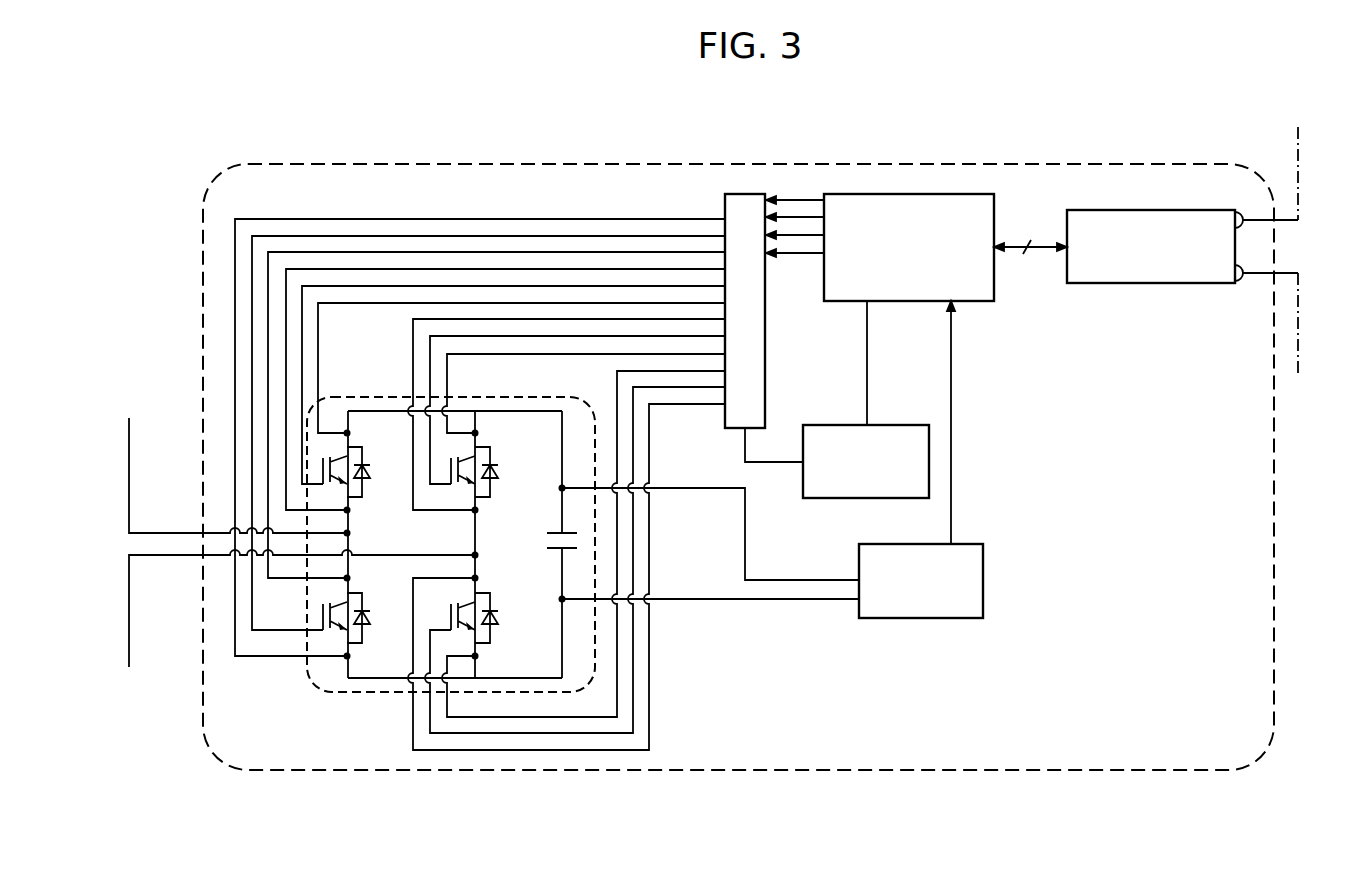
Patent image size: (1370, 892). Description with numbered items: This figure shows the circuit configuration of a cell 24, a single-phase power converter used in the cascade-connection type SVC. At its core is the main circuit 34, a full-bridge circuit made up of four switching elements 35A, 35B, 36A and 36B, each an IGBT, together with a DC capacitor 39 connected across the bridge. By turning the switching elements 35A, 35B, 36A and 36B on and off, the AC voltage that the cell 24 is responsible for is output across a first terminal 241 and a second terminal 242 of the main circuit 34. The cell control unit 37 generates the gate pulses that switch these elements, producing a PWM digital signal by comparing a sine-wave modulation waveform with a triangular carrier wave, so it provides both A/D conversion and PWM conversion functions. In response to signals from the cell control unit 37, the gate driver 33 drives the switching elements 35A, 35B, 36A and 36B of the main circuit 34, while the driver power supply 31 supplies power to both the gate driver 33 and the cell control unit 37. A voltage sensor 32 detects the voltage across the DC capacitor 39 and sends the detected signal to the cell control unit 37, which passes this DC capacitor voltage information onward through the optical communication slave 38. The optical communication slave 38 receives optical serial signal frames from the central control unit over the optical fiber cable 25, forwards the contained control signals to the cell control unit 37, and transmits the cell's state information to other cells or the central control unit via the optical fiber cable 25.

The cell 24 is at (618, 163).
The optical fiber cable 25 is at (1300, 148).
The driver power supply 31 is at (898, 425).
The voltage sensor 32 is at (985, 580).
The gate driver 33 is at (748, 194).
The main circuit 34 is at (362, 694).
The switching element 35A is at (491, 483).
The switching element 35B is at (363, 483).
The switching element 36A is at (491, 632).
The switching element 36B is at (362, 632).
The cell control unit 37 is at (908, 194).
The optical communication slave 38 is at (1145, 210).
The DC capacitor 39 is at (556, 551).
The first terminal 241 is at (162, 531).
The second terminal 242 is at (160, 558).